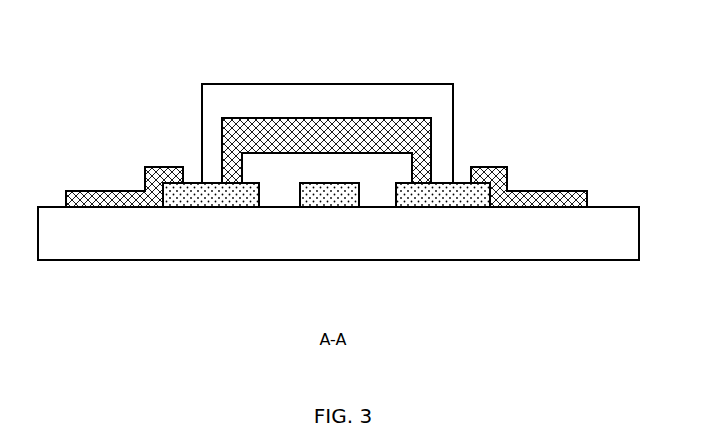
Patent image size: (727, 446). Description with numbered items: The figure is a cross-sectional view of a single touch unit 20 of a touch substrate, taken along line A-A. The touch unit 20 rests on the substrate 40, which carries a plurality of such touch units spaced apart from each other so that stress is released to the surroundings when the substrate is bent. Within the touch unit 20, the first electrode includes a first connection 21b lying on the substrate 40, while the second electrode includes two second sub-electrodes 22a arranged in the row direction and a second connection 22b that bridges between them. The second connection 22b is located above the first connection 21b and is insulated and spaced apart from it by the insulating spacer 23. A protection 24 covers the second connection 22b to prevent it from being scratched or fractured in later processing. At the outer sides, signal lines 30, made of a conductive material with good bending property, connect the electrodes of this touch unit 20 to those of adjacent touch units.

The touch unit 20 is at (137, 76).
The first connection 21b is at (332, 196).
The second sub-electrode 22a is at (210, 200).
The second connection 22b is at (317, 130).
The insulating spacer 23 is at (275, 169).
The protection 24 is at (378, 103).
The signal line 30 is at (122, 208).
The substrate 40 is at (590, 234).